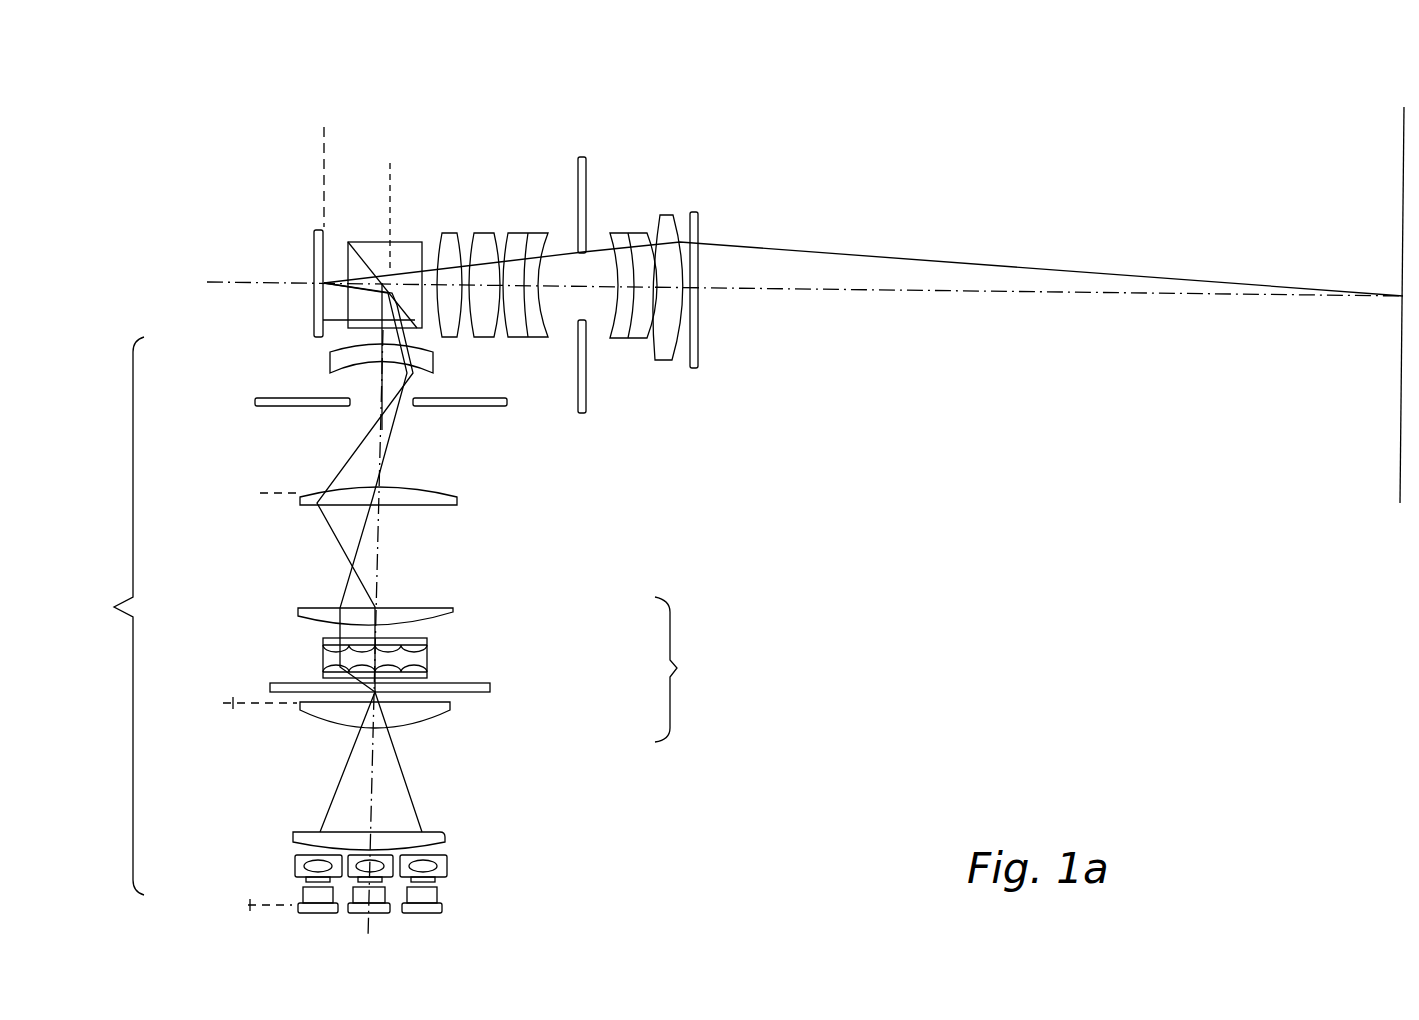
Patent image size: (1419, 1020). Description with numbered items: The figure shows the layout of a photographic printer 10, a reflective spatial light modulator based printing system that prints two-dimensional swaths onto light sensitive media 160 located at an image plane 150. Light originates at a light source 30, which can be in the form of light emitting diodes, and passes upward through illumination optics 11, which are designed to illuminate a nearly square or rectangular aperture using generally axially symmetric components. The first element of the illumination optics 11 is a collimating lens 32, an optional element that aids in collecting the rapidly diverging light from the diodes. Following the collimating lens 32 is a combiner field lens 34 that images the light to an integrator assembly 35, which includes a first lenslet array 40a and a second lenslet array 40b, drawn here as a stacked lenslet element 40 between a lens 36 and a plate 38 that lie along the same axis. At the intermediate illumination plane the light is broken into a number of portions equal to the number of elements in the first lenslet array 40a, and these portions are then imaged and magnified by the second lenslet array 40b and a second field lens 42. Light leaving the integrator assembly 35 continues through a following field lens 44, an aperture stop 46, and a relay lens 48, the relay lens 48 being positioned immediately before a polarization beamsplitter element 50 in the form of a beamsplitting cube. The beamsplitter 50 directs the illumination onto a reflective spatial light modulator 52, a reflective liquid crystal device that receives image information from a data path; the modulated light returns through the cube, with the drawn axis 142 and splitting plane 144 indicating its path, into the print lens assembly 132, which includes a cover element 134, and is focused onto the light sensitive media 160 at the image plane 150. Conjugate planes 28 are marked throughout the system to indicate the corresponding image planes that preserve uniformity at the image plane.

The photographic printer 10 is at (181, 141).
The illumination optics 11 is at (117, 616).
The conjugate planes 28 is at (325, 142).
The light source 30 is at (440, 898).
The collimating lens 32 is at (448, 866).
The combiner field lens 34 is at (440, 832).
The integrator assembly 35 is at (677, 668).
The lens 36 is at (428, 714).
The plate / diffuser 38 is at (478, 692).
The lenslet array 40 is at (461, 661).
The first lenslet array 40a is at (432, 657).
The second lenslet array 40b is at (427, 642).
The second field lens 42 is at (445, 615).
The field lens 44 is at (457, 500).
The aperture stop 46 is at (507, 406).
The relay lens 48 is at (328, 363).
The polarization beamsplitter element 50 is at (408, 238).
The reflective spatial light modulator 52 is at (315, 232).
The print lens assembly 132 is at (565, 236).
The cover plate 134 is at (702, 222).
The output axis 142 is at (260, 315).
The beam splitter plane 144 is at (387, 177).
The image plane 150 is at (1400, 418).
The light sensitive media 160 is at (1403, 238).